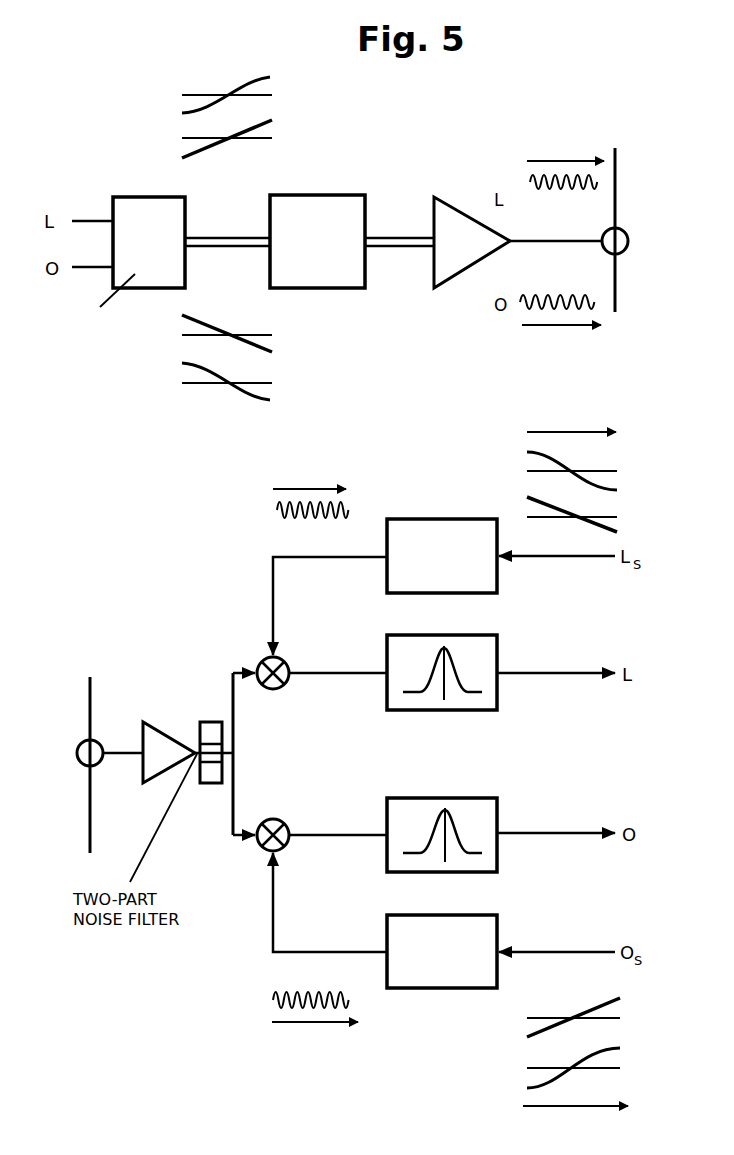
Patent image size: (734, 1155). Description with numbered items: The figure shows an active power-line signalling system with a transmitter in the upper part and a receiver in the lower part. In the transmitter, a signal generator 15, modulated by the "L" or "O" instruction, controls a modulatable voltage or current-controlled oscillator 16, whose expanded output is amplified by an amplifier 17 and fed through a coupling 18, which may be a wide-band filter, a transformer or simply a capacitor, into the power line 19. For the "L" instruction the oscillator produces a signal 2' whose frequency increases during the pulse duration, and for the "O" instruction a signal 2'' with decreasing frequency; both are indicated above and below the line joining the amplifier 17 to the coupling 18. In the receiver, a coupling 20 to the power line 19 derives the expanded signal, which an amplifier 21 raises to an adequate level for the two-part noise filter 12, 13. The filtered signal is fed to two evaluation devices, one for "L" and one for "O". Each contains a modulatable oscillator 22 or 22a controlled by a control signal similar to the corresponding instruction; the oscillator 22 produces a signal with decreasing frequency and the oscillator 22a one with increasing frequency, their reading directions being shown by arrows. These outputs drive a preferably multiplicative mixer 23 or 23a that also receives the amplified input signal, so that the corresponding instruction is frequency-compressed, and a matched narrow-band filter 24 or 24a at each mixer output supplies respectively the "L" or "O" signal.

The signal generator 15 is at (139, 195).
The modulatable voltage or current-controlled oscillator 16 is at (322, 196).
The amplifier 17 is at (463, 212).
The coupling 18 is at (629, 240).
The power line 19 is at (618, 285).
The signal with increasing frequency 2' is at (565, 154).
The signal with decreasing frequency 2'' is at (560, 333).
The coupling 20 is at (77, 754).
The amplifier 21 is at (170, 731).
The noise filter 12 is at (209, 727).
The noise filter 13 is at (211, 788).
The modulatable voltage or current-controlled oscillator 22 is at (444, 519).
The modulatable voltage or current-controlled oscillator 22a is at (422, 990).
The mixer 23 is at (261, 661).
The mixer 23a is at (262, 852).
The matched filter 24 is at (387, 647).
The matched filter 24a is at (387, 861).